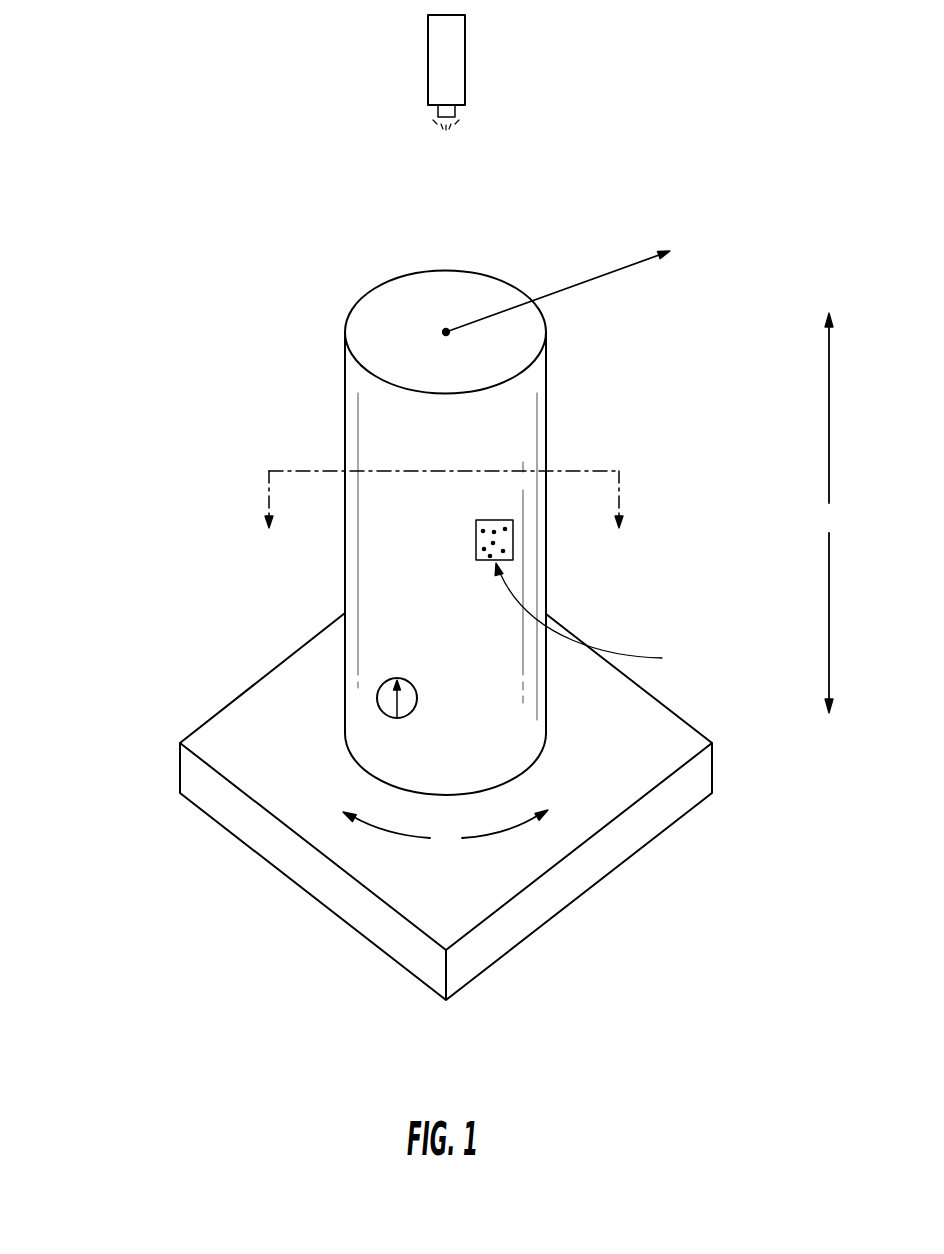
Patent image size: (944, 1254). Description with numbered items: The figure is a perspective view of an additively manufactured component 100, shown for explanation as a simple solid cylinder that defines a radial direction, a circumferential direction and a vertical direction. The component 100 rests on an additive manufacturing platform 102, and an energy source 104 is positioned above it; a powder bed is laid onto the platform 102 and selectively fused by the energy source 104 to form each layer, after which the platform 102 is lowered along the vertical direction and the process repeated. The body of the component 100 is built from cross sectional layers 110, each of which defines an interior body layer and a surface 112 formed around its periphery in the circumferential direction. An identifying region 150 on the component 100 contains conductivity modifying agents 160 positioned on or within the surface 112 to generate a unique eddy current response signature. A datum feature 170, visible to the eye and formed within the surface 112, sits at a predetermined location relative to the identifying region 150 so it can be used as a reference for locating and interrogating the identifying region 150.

The additively manufactured component 100 is at (110, 386).
The additive manufacturing platform 102 is at (190, 735).
The energy source 104 is at (465, 55).
The cross sectional layer 110 is at (450, 533).
The surface 112 is at (345, 385).
The identifying region 150 is at (597, 621).
The conductivity modifying agents 160 is at (508, 530).
The datum feature 170 is at (377, 698).